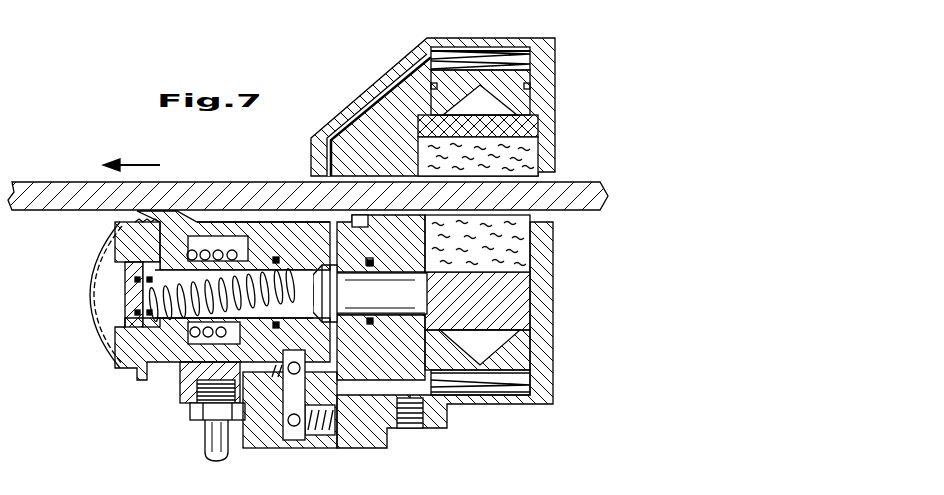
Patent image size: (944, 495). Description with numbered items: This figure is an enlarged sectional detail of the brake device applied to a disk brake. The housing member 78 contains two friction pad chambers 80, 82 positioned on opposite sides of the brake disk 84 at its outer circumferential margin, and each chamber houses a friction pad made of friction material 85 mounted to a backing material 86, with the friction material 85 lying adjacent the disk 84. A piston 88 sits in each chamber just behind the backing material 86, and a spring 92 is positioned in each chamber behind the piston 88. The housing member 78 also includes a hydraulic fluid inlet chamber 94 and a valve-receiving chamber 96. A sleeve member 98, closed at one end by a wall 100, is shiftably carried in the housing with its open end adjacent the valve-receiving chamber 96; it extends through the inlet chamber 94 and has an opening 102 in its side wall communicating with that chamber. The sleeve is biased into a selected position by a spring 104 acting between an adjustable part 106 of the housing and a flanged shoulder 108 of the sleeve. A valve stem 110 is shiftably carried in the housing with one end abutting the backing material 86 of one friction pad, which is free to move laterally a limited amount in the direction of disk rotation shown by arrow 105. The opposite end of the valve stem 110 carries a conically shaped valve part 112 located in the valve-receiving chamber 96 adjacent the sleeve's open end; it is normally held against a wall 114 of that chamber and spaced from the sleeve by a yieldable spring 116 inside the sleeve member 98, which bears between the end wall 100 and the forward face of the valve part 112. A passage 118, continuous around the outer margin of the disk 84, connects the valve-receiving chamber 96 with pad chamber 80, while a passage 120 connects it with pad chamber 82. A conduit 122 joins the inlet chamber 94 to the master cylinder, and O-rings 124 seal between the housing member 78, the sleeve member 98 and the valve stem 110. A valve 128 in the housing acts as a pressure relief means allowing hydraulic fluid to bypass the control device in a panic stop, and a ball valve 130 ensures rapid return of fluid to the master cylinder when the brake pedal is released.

The housing member 78 is at (347, 110).
The friction pad chamber 80 is at (532, 66).
The friction pad chamber 82 is at (532, 394).
The brake disk 84 is at (602, 196).
The friction material 85 is at (532, 150).
The backing material 86 is at (532, 128).
The piston 88 is at (532, 98).
The spring 92 is at (519, 49).
The hydraulic fluid inlet chamber 94 is at (222, 243).
The valve-receiving chamber 96 is at (317, 262).
The sleeve member 98 is at (128, 243).
The wall 100 is at (132, 294).
The opening 102 is at (212, 325).
The spring 104 is at (204, 250).
The arrow 105 is at (131, 161).
The adjustable part 106 is at (118, 345).
The flanged shoulder 108 is at (245, 257).
The valve stem 110 is at (410, 280).
The valve part 112 is at (326, 292).
The wall 114 is at (335, 245).
The yieldable spring 116 is at (141, 300).
The passage 118 is at (384, 88).
The passage 120 is at (382, 432).
The conduit 122 is at (210, 444).
The O-rings 124 is at (178, 368).
The valve 128 is at (293, 428).
The ball valve 130 is at (293, 374).